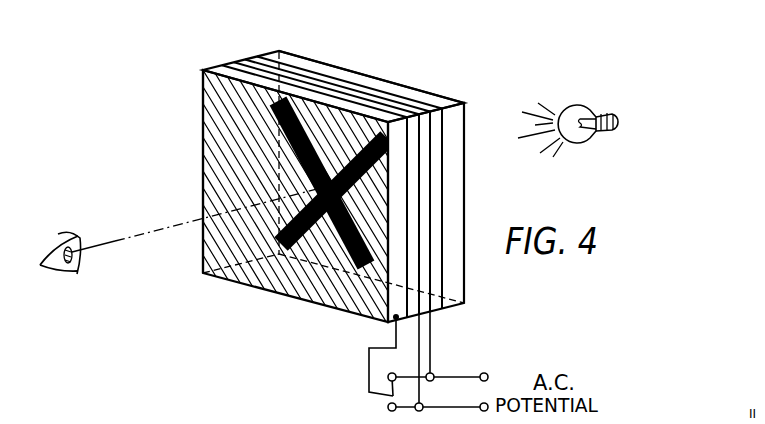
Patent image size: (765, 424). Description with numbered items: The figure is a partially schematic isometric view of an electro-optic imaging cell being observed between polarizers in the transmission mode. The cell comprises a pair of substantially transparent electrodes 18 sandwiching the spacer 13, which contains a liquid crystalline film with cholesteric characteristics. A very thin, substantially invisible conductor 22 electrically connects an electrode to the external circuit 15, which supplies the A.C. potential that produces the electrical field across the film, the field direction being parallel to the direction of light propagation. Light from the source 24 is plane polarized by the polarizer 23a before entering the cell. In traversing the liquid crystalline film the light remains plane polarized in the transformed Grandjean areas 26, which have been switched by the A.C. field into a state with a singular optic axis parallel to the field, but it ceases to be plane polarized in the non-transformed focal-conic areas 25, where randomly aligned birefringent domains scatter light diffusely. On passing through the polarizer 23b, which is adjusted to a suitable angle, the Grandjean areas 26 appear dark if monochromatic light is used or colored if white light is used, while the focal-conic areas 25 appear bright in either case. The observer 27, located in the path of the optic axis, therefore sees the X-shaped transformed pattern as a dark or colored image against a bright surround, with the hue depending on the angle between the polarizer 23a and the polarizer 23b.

The spacer gasket 13 is at (285, 181).
The external circuit 15 is at (480, 370).
The transparent electrodes 18 is at (232, 64).
The conductor 22 is at (380, 321).
The polarizer 23a is at (375, 84).
The polarizer 23b is at (203, 82).
The light source 24 is at (576, 108).
The non-transformed (focal-conic) areas 25 is at (235, 162).
The transformed (Grandjean) areas 26 is at (283, 243).
The observer 27 is at (48, 246).